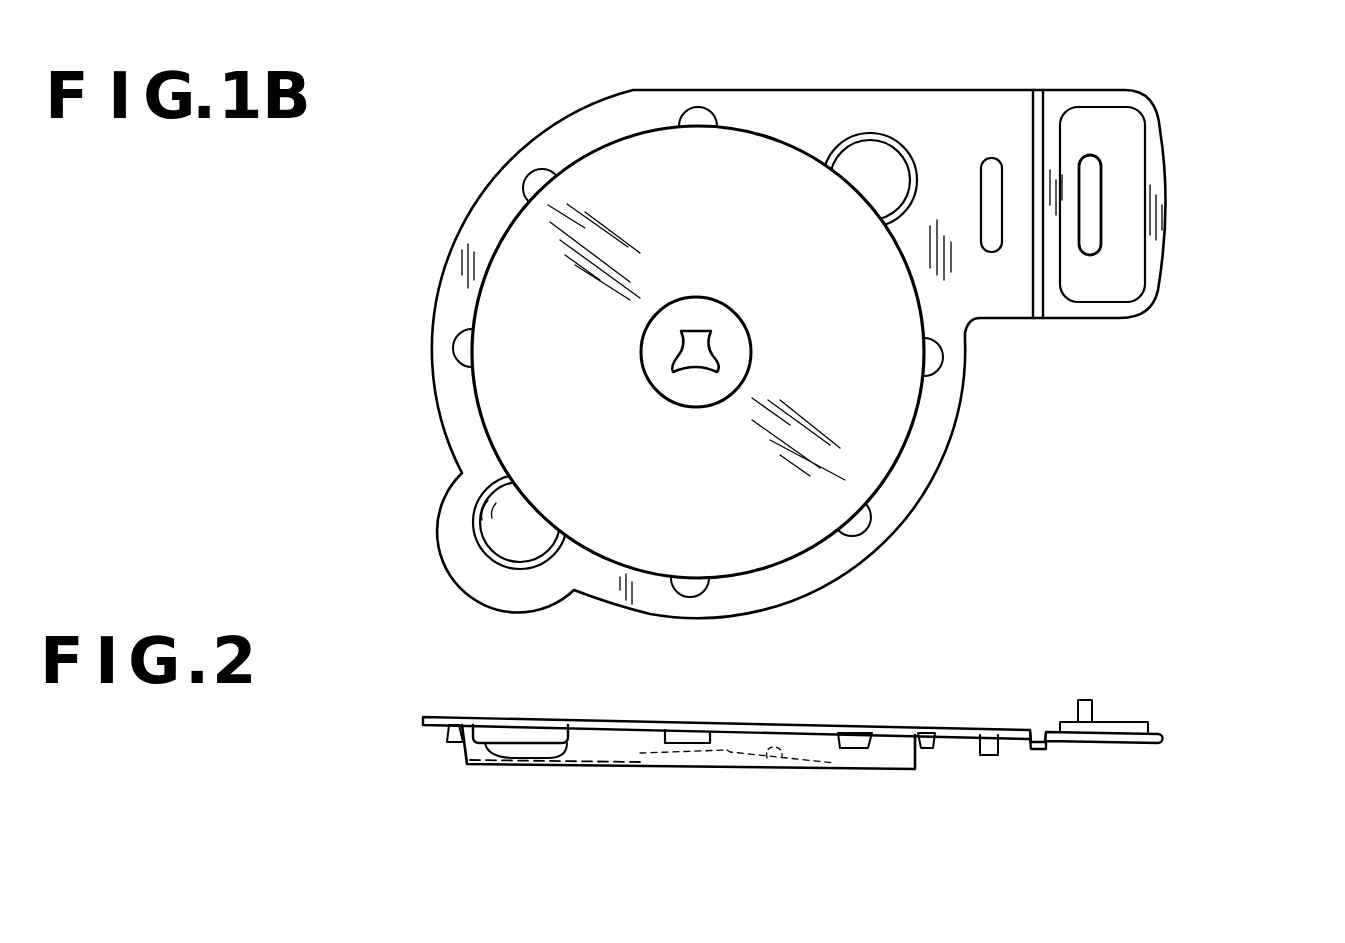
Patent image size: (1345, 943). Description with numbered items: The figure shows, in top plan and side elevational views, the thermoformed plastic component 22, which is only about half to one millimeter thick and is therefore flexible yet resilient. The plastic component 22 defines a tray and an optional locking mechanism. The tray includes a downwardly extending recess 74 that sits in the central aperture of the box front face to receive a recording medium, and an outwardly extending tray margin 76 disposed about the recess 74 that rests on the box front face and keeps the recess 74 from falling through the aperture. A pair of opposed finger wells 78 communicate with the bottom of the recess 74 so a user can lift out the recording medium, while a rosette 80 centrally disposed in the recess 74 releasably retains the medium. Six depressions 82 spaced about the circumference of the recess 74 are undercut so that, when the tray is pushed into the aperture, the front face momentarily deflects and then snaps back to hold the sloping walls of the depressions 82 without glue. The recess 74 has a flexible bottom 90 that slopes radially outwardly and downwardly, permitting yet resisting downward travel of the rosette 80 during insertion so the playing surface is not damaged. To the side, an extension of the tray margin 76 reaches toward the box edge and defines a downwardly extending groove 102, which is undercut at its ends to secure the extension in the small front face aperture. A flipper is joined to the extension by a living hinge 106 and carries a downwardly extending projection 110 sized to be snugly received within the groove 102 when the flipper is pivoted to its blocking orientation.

In FIG. 1B, the plastic component 22 is at (1170, 250).
In FIG. 1B, the recess 74 is at (885, 415).
In FIG. 2, the recess 74 is at (806, 771).
In FIG. 1B, the tray margin 76 is at (447, 255).
In FIG. 2, the tray margin 76 is at (450, 717).
In FIG. 1B, the finger wells 78 is at (876, 170).
In FIG. 2, the finger wells 78 is at (530, 745).
In FIG. 1B, the rosette 80 is at (700, 335).
In FIG. 2, the rosette 80 is at (727, 743).
In FIG. 1B, the depressions 82 is at (697, 118).
In FIG. 2, the depressions 82 is at (690, 745).
In FIG. 1B, the flexible bottom 90 is at (513, 418).
In FIG. 2, the flexible bottom 90 is at (772, 771).
In FIG. 1B, the groove 102 is at (1000, 170).
In FIG. 2, the groove 102 is at (996, 757).
In FIG. 1B, the living hinge 106 is at (1038, 320).
In FIG. 2, the living hinge 106 is at (1040, 748).
In FIG. 1B, the projection 110 is at (1100, 195).
In FIG. 2, the projection 110 is at (1090, 700).